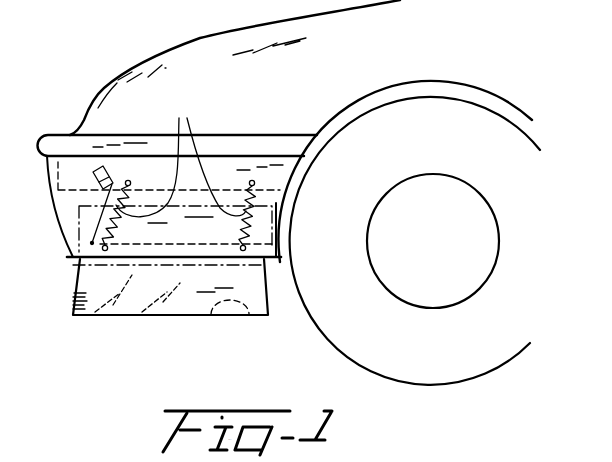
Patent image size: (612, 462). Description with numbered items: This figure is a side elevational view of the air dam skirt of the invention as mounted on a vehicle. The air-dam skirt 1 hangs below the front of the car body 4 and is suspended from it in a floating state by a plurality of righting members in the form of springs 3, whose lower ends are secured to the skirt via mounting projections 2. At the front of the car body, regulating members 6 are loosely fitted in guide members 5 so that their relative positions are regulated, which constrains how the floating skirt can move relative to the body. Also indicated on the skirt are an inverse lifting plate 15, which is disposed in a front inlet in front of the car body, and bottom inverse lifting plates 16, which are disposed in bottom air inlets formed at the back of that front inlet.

The air-dam skirt 1 is at (73, 310).
The mounting projections 2 is at (104, 252).
The springs 3 is at (181, 155).
The car body 4 is at (230, 168).
The guide members 5 is at (92, 243).
The regulating members 6 is at (100, 188).
The inverse lifting plate 15 is at (107, 307).
The bottom inverse lifting plates 16 is at (167, 305).